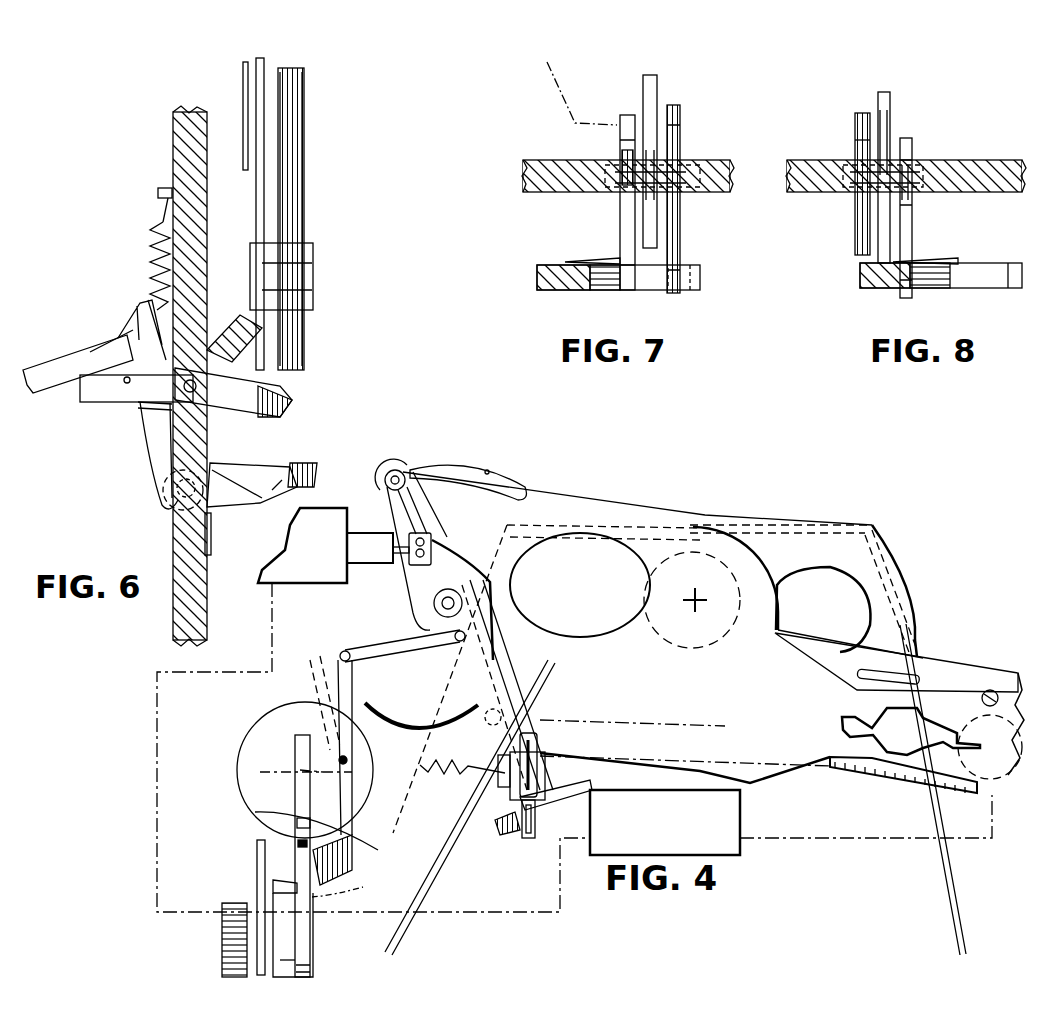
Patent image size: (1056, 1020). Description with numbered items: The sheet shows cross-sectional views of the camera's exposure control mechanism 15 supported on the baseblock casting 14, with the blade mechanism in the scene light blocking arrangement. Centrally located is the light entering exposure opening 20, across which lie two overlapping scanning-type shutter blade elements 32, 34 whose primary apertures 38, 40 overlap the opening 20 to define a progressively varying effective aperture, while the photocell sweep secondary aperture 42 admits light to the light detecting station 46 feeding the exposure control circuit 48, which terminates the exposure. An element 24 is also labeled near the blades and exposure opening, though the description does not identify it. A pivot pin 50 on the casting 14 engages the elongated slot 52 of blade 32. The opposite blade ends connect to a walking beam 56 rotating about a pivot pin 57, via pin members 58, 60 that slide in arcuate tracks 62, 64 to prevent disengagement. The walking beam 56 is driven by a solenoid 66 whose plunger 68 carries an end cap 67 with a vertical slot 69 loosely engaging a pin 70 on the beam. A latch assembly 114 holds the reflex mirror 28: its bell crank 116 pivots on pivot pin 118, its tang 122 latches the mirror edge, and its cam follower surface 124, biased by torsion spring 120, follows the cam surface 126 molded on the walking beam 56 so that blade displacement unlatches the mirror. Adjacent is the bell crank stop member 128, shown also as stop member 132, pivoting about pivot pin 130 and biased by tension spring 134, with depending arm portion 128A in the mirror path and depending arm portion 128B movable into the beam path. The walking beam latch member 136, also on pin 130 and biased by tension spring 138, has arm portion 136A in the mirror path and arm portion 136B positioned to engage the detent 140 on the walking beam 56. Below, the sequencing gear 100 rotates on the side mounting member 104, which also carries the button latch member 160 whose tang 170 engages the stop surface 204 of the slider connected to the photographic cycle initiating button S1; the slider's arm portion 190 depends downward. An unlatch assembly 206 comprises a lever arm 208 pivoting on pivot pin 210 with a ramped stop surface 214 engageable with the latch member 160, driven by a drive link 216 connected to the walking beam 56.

In FIG. 4, the baseblock casting 14 is at (962, 616).
In FIG. 4, the exposure control mechanism 15 is at (605, 500).
In FIG. 4, the light entering exposure opening 20 is at (700, 645).
In FIG. 4, the shutter blade 24 is at (698, 598).
In FIG. 6, the reflex mirror 28 is at (52, 362).
In FIG. 4, the shutter blade element 32 is at (425, 475).
In FIG. 4, the shutter blade element 34 is at (820, 770).
In FIG. 4, the primary aperture 38 is at (525, 620).
In FIG. 4, the primary aperture 40 is at (823, 570).
In FIG. 4, the photocell sweep secondary aperture 42 is at (870, 762).
In FIG. 4, the light detecting station 46 is at (1018, 680).
In FIG. 4, the exposure control circuit 48 is at (740, 850).
In FIG. 4, the pivot pin 50 is at (990, 690).
In FIG. 4, the elongated slot 52 is at (930, 678).
In FIG. 7, the walking beam 56 is at (604, 292).
In FIG. 8, the walking beam 56 is at (885, 292).
In FIG. 4, the pivot pin 57 is at (434, 604).
In FIG. 4, the pin member 58 is at (398, 470).
In FIG. 4, the pin member 60 is at (500, 745).
In FIG. 4, the arcuate track 62 is at (494, 470).
In FIG. 4, the arcuate track 64 is at (455, 725).
In FIG. 4, the solenoid 66 is at (326, 583).
In FIG. 4, the end cap 67 is at (410, 583).
In FIG. 4, the solenoid plunger 68 is at (400, 540).
In FIG. 4, the vertical slot 69 is at (425, 535).
In FIG. 4, the pin 70 is at (428, 548).
In FIG. 4, the sequencing gear 100 is at (220, 940).
In FIG. 4, the side mounting member 104 is at (258, 842).
In FIG. 6, the latch assembly 114 is at (140, 413).
In FIG. 7, the latch assembly 114 is at (684, 252).
In FIG. 8, the latch assembly 114 is at (918, 236).
In FIG. 4, the latch assembly 114 is at (540, 822).
In FIG. 6, the bell crank 116 is at (224, 525).
In FIG. 7, the bell crank 116 is at (680, 228).
In FIG. 8, the bell crank 116 is at (913, 226).
In FIG. 4, the bell crank 116 is at (548, 735).
In FIG. 6, the pivot pin 118 is at (175, 497).
In FIG. 7, the pivot pin 118 is at (658, 170).
In FIG. 8, the pivot pin 118 is at (895, 172).
In FIG. 6, the torsion spring 120 is at (236, 498).
In FIG. 6, the tang 122 is at (100, 348).
In FIG. 6, the cam follower surface 124 is at (303, 462).
In FIG. 4, the cam surface 126 is at (512, 833).
In FIG. 6, the bell crank stop member 128 is at (285, 386).
In FIG. 6, the depending arm portion 128A is at (110, 403).
In FIG. 6, the depending arm portion 128B is at (240, 410).
In FIG. 6, the pivot pin 130 is at (158, 440).
In FIG. 6, the stop member 132 is at (292, 404).
In FIG. 6, the tension spring 134 is at (140, 312).
In FIG. 6, the latch member 136 is at (265, 329).
In FIG. 6, the depending arm portion 136A is at (80, 392).
In FIG. 6, the depending arm portion 136B is at (232, 370).
In FIG. 7, the tension spring 138 is at (655, 222).
In FIG. 8, the tension spring 138 is at (890, 228).
In FIG. 7, the detent 140 is at (580, 260).
In FIG. 8, the detent 140 is at (905, 262).
In FIG. 4, the button latch member 160 is at (313, 958).
In FIG. 4, the tang 170 is at (355, 865).
In FIG. 4, the arm portion 190 is at (318, 918).
In FIG. 4, the stop surface 204 is at (385, 850).
In FIG. 4, the unlatch assembly 206 is at (330, 652).
In FIG. 4, the lever arm 208 is at (335, 700).
In FIG. 4, the pivot pin 210 is at (350, 758).
In FIG. 4, the ramped stop surface 214 is at (273, 885).
In FIG. 4, the drive link 216 is at (385, 636).
In FIG. 4, the photographic cycle initiating button S1 is at (255, 740).